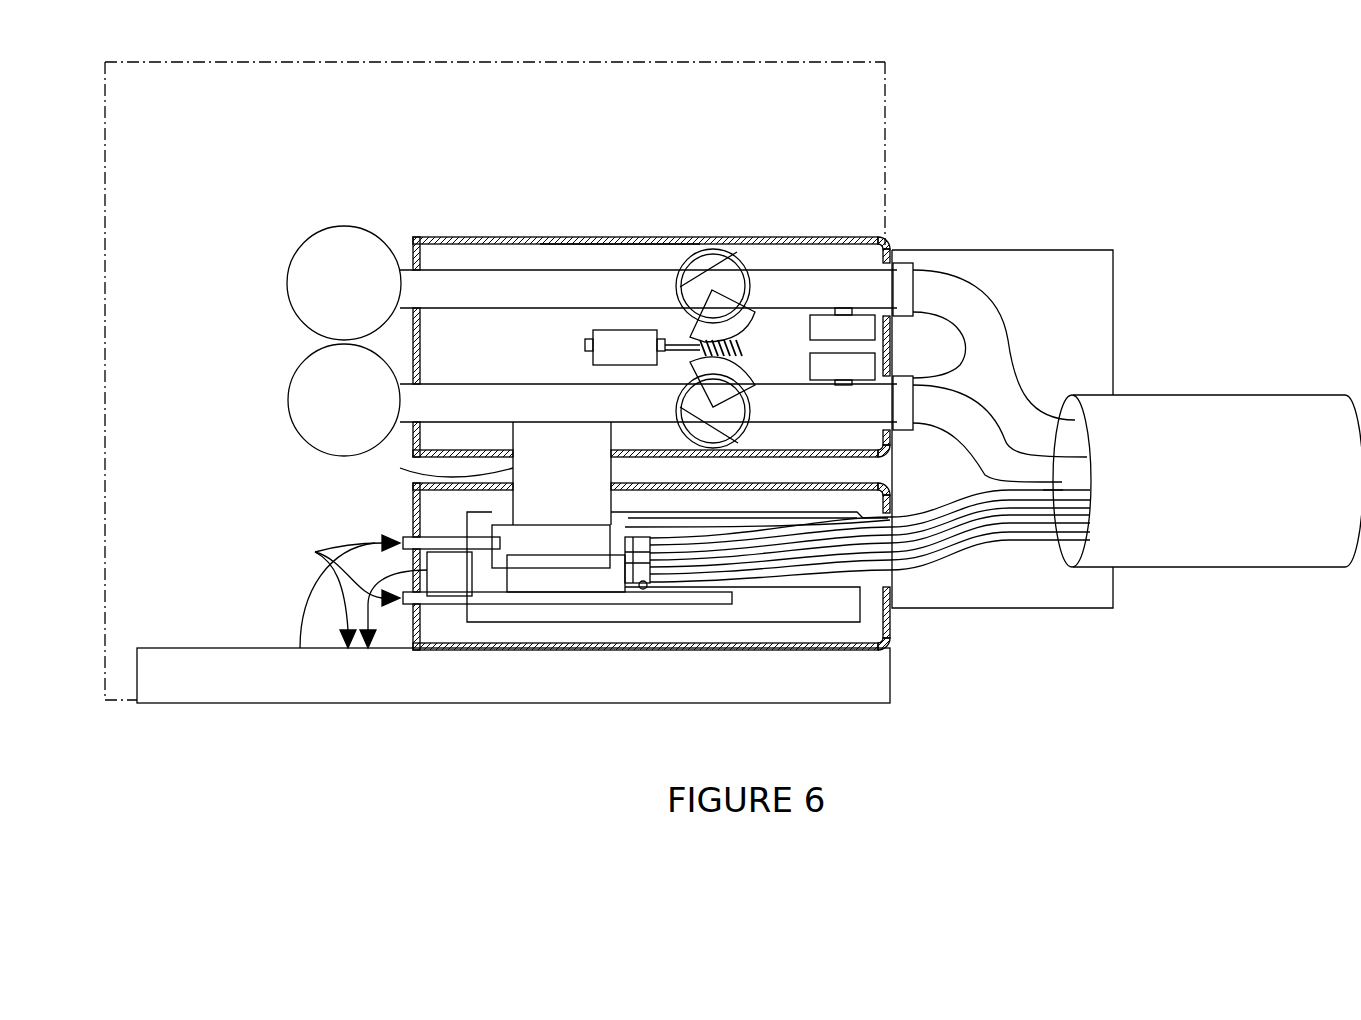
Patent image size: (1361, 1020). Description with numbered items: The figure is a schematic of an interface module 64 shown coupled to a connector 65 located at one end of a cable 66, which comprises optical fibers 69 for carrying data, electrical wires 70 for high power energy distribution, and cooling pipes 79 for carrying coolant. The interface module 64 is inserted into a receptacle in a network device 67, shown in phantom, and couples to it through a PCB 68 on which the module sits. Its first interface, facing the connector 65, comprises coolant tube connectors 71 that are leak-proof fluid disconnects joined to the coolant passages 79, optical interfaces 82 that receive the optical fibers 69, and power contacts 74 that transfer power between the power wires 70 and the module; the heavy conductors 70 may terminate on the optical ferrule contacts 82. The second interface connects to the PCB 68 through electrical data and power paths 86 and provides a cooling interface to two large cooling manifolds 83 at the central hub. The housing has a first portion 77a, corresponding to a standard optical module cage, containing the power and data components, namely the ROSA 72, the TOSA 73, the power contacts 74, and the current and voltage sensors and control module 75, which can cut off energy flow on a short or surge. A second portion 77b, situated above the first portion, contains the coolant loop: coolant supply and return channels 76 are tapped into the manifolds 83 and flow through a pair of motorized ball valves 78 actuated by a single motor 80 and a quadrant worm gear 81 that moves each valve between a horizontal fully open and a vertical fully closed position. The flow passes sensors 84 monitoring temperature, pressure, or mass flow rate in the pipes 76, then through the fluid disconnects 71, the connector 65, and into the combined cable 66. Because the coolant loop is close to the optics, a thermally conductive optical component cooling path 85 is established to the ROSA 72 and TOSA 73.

The interface module 64 is at (748, 237).
The connector 65 is at (1010, 250).
The cable 66 is at (1180, 395).
The network device 67 is at (886, 84).
The PCB 68 is at (255, 648).
The optical fibers 69 is at (980, 547).
The electrical wires 70 is at (1020, 527).
The coolant tube connectors 71 is at (910, 383).
The ROSA 72 is at (585, 593).
The TOSA 73 is at (583, 530).
The power contacts 74 is at (627, 550).
The sensors and control module 75 is at (443, 557).
The coolant supply and return channels 76 is at (513, 272).
The first portion of housing 77a is at (460, 650).
The second portion of housing 77b is at (578, 238).
The motorized ball valves 78 is at (690, 392).
The cooling pipes 79 is at (937, 397).
The motor 80 is at (606, 333).
The quadrant worm gear 81 is at (745, 350).
The optical interfaces 82 is at (655, 548).
The cooling manifolds 83 is at (330, 368).
The sensors 84 is at (823, 363).
The optical component cooling path 85 is at (439, 475).
The electrical data paths 86 is at (355, 591).